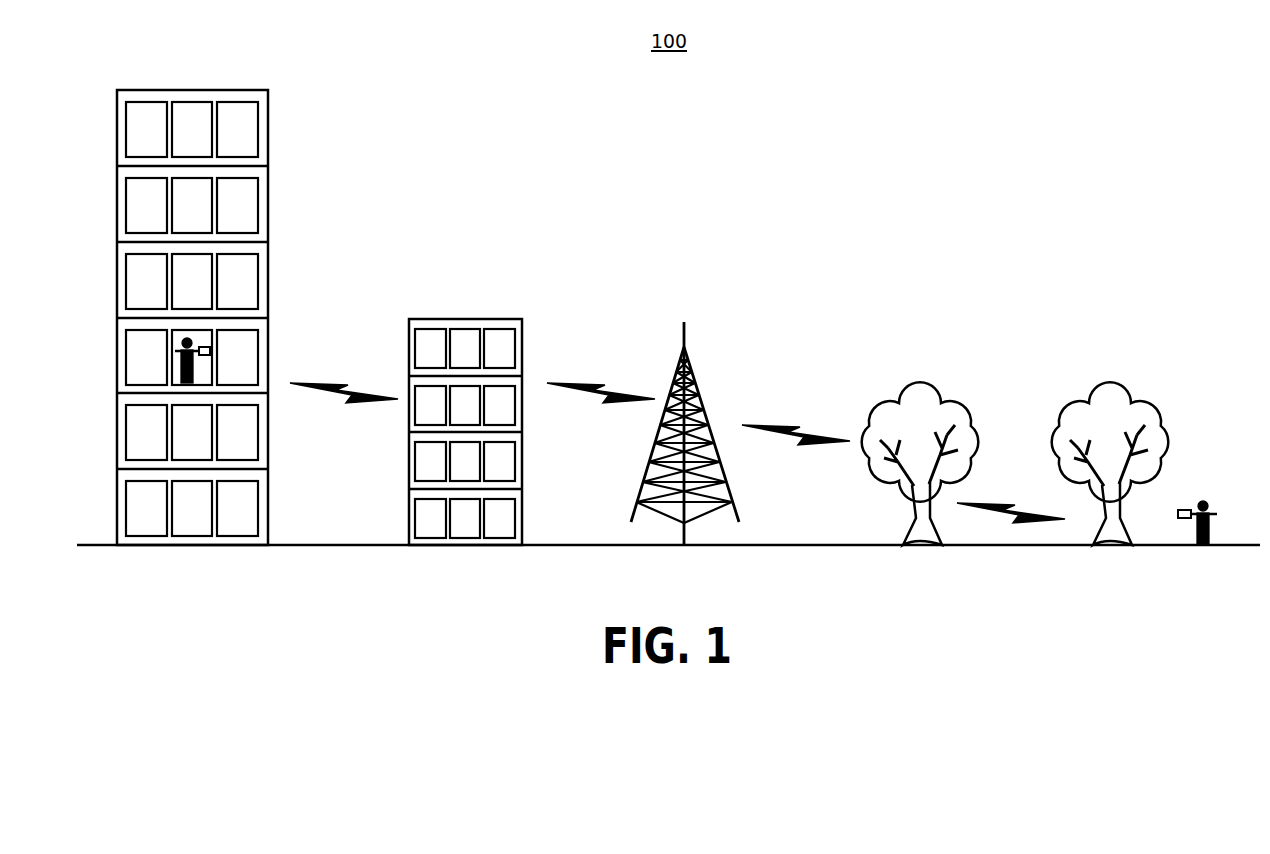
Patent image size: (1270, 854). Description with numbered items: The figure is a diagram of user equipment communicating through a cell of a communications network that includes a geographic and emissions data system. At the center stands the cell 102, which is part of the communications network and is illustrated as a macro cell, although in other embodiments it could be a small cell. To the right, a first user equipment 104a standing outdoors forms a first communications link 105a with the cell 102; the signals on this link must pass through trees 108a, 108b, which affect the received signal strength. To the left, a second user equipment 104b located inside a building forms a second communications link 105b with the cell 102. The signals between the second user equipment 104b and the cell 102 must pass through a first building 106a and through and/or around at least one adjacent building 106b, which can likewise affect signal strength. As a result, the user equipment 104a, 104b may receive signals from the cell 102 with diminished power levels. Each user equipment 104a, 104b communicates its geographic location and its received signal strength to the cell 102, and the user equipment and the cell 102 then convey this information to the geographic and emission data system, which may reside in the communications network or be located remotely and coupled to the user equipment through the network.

The cell 102 is at (697, 410).
The first user equipment 104a is at (1182, 508).
The second user equipment 104b is at (210, 351).
The first communications link 105a is at (772, 425).
The second communications link 105b is at (577, 384).
The first building 106a is at (154, 90).
The adjacent building 106b is at (433, 319).
The tree 108a is at (885, 395).
The tree 108b is at (1076, 392).